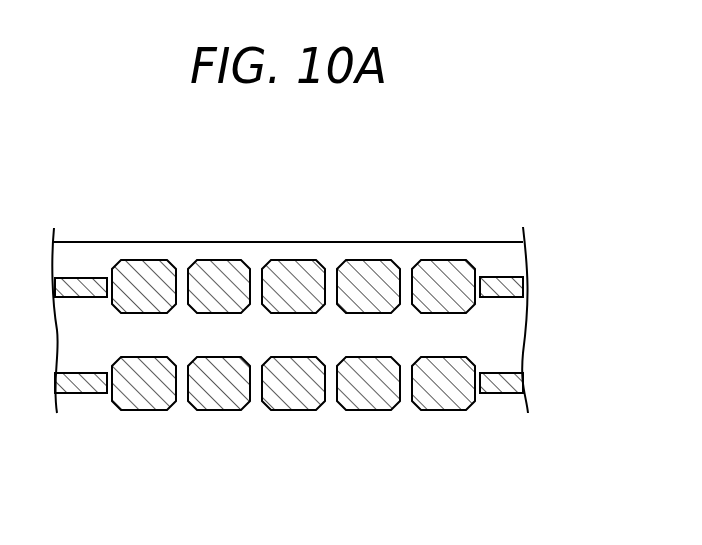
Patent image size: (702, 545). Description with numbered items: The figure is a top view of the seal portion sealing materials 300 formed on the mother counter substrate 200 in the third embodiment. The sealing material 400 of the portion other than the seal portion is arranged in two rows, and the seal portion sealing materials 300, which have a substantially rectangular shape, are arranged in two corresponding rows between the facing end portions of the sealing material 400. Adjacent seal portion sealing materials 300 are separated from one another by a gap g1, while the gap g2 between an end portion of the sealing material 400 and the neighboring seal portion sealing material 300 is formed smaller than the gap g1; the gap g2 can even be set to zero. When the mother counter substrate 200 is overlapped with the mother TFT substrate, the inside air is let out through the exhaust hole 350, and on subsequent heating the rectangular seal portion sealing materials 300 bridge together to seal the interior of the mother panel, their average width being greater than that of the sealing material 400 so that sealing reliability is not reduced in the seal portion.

The mother counter substrate 200 is at (338, 242).
The seal portion sealing material 300 is at (292, 260).
The exhaust hole 350 is at (253, 280).
The sealing material 400 is at (500, 275).
The gap g1 is at (188, 277).
The gap g2 is at (114, 262).